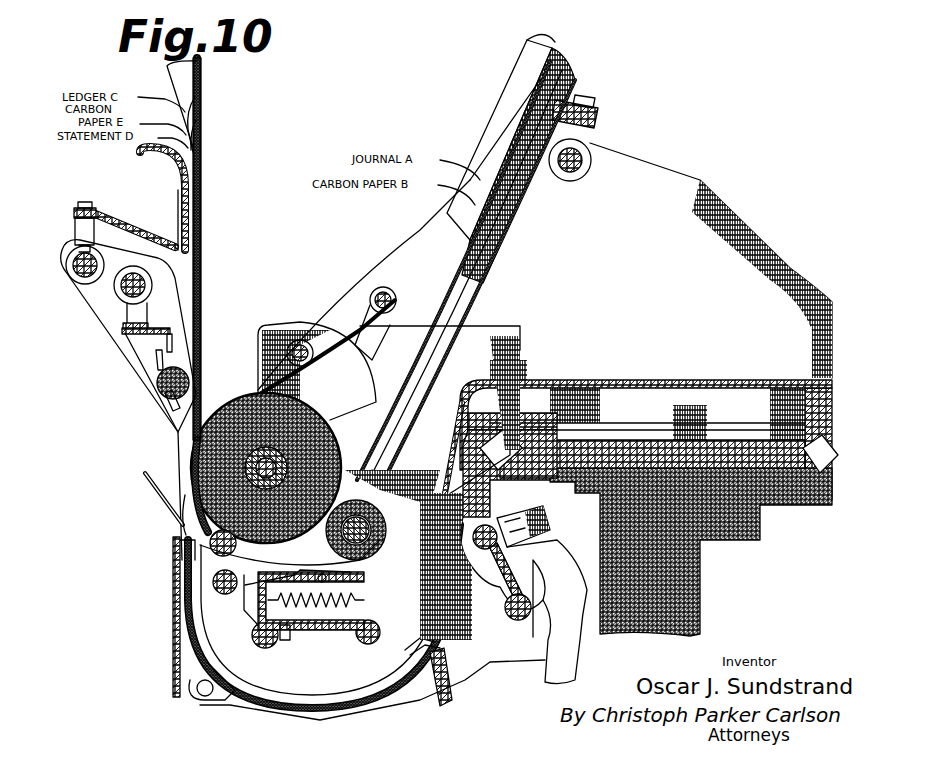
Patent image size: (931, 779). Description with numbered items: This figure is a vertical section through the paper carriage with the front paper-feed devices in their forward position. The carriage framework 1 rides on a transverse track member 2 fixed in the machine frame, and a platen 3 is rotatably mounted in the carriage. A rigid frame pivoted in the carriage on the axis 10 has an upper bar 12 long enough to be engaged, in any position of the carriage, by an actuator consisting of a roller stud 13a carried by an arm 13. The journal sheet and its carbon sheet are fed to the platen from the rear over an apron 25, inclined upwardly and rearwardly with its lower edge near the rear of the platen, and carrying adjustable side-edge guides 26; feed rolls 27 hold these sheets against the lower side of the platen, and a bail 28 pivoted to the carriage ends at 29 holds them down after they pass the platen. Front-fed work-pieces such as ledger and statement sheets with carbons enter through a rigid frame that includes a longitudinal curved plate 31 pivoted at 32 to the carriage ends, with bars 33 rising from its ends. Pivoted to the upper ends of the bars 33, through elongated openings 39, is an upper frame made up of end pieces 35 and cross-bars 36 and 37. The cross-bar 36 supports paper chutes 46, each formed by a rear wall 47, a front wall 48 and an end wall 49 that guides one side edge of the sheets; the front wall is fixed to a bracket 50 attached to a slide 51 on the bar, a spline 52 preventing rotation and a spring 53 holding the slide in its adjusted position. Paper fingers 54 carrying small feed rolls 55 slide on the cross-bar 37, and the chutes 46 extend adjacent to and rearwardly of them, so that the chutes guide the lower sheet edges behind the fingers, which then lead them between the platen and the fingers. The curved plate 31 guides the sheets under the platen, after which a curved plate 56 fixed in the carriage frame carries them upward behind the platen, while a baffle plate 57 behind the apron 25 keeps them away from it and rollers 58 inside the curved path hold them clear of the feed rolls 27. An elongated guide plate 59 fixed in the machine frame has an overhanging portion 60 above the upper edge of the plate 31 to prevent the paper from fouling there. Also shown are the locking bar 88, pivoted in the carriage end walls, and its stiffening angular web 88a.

The carriage framework 1 is at (660, 185).
The transverse track member 2 is at (690, 440).
The platen 3 is at (250, 400).
The axis 10 is at (535, 600).
The upper bar 12 is at (490, 525).
The arm 13 is at (548, 558).
The roller stud 13a is at (550, 522).
The apron 25 is at (447, 306).
The guides 26 is at (520, 60).
The feed rolls 27 is at (372, 565).
The bail 28 is at (300, 345).
The pivot 29 is at (380, 295).
The curved plate 31 is at (176, 614).
The pivot 32 is at (215, 700).
The bars 33 is at (180, 450).
The end pieces 35 is at (137, 353).
The cross-bar 36 is at (88, 285).
The cross-bar 37 is at (133, 290).
The elongated openings 39 is at (158, 380).
The paper chutes 46 is at (219, 119).
The rear wall 47 is at (202, 98).
The front wall 48 is at (175, 232).
The end wall 49 is at (182, 88).
The bracket 50 is at (178, 206).
The slide 51 is at (97, 262).
The spline 52 is at (78, 240).
The spring 53 is at (76, 228).
The paper fingers 54 is at (158, 355).
The feed rolls 55 is at (172, 418).
The curved plate 56 is at (318, 704).
The baffle plate 57 is at (440, 388).
The rollers 58 is at (212, 590).
The elongated guide plate 59 is at (150, 488).
The overhanging portion 60 is at (180, 505).
The locking bar 88 is at (452, 684).
The angular web 88a is at (450, 660).